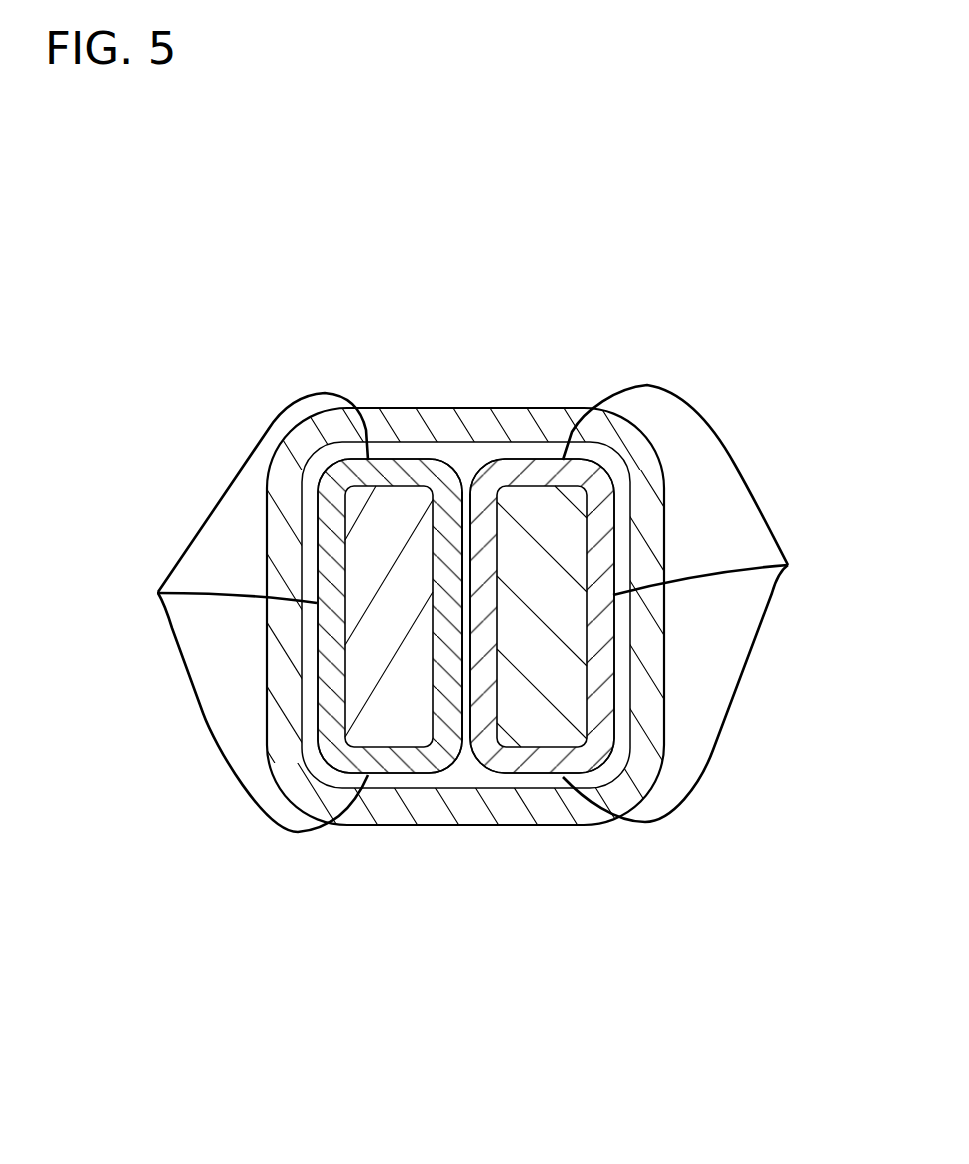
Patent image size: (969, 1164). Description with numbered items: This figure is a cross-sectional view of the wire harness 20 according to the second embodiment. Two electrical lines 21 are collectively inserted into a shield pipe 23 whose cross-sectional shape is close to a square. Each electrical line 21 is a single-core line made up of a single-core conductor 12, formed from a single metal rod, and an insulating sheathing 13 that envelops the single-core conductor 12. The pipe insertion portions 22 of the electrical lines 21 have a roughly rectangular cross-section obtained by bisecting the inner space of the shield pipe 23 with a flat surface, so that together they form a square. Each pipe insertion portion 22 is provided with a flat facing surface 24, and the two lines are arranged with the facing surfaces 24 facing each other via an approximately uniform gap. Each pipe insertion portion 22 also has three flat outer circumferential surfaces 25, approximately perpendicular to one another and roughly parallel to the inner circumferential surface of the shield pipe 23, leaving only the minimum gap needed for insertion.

The wire harness 20 is at (457, 623).
The shield pipe 23 is at (545, 413).
The insulating sheathing 13 is at (520, 767).
The single-core conductor 12 is at (547, 730).
The electrical line 21 is at (398, 720).
The pipe insertion portion 22 is at (522, 707).
The facing surface 24 is at (495, 588).
The outer circumferential surface 25 is at (476, 608).